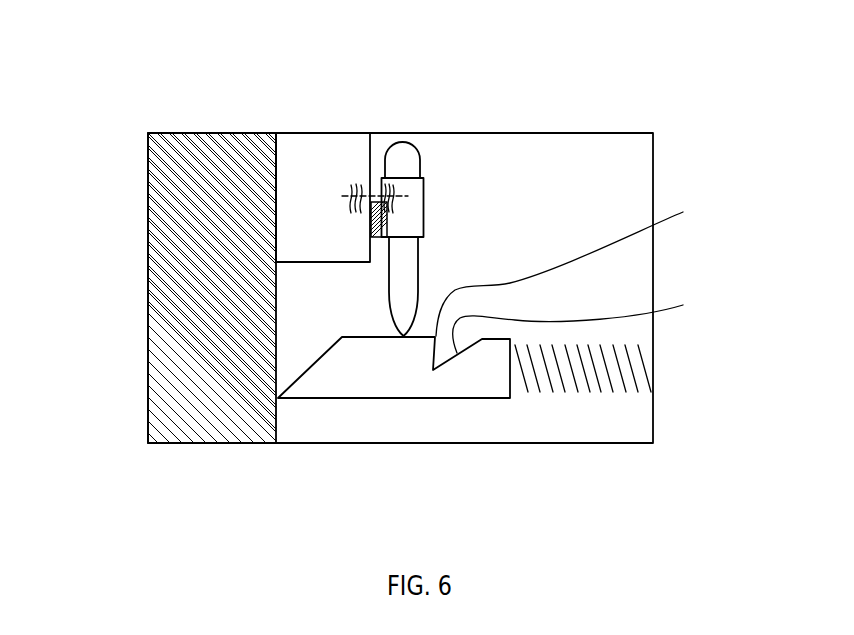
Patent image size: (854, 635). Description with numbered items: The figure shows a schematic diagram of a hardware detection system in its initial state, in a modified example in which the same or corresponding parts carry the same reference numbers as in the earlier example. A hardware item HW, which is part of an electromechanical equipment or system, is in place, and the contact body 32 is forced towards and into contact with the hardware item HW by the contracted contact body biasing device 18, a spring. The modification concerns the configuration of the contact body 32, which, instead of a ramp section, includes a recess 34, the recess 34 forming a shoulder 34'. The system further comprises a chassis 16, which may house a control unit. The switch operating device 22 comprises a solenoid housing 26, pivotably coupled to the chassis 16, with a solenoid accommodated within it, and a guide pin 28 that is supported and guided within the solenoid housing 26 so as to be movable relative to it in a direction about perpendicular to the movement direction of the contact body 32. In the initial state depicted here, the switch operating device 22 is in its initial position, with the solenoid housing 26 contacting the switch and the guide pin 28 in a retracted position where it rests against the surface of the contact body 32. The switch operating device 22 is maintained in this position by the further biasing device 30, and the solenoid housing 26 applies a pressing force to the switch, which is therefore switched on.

The hardware item HW is at (165, 313).
The chassis 16 is at (303, 163).
The contact body biasing device 18 is at (615, 388).
The switch operating device 22 is at (502, 70).
The solenoid housing 26 is at (402, 223).
The guide pin 28 is at (405, 270).
The further biasing device 30 is at (353, 187).
The contact body 32 is at (332, 390).
The recess 34 is at (588, 322).
The shoulder 34' is at (572, 260).